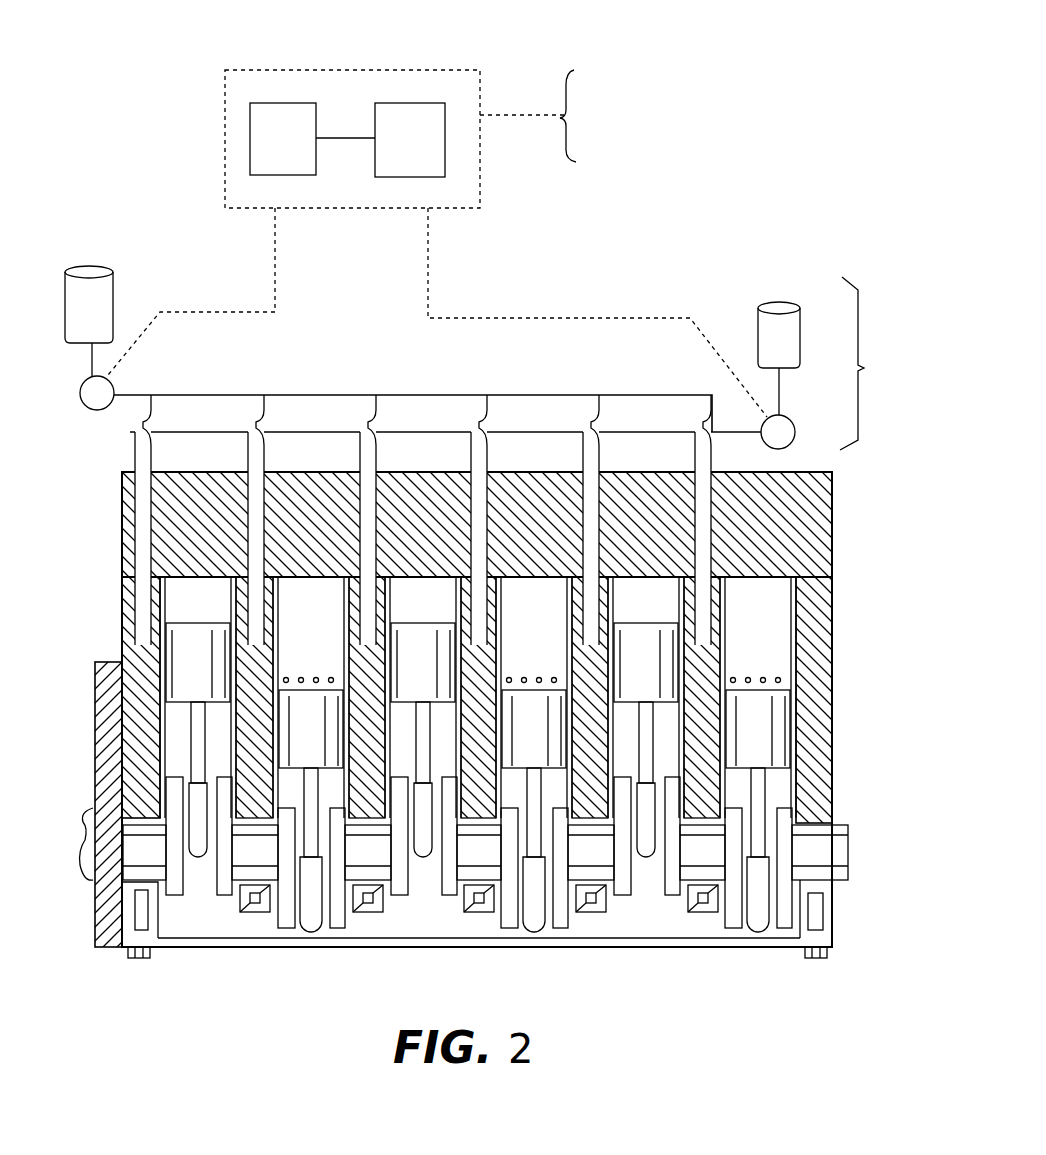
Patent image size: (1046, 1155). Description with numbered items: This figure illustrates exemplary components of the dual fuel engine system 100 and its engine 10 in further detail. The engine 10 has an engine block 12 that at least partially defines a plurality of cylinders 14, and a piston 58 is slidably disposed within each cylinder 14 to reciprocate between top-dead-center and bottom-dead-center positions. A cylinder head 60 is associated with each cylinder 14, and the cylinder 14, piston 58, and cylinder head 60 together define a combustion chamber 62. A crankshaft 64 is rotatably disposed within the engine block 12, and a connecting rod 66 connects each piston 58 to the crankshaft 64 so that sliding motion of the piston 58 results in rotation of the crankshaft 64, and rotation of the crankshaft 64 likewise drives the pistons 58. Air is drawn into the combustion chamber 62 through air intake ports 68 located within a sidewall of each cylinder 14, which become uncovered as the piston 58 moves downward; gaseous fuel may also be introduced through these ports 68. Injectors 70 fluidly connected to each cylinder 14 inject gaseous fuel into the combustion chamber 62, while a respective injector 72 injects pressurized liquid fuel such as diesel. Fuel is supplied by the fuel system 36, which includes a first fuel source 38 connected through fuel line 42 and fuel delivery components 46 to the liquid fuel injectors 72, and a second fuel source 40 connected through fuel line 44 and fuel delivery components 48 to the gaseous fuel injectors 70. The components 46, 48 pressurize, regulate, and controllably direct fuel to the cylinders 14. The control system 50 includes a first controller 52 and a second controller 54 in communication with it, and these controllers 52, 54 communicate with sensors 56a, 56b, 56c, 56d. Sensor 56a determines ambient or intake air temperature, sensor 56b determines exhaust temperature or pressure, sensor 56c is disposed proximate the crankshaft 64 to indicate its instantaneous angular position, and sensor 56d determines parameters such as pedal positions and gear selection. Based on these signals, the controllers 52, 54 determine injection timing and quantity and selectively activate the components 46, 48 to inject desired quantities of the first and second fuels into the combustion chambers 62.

The dual fuel engine system 100 is at (733, 72).
The control system 50 is at (417, 72).
The first controller 52 is at (292, 150).
The second controller 54 is at (418, 151).
The sensor 56a is at (545, 116).
The sensor 56b is at (597, 103).
The sensor 56c is at (86, 810).
The sensor 56d is at (597, 142).
The first fuel source 38 is at (100, 323).
The second fuel source 40 is at (789, 347).
The fuel system 36 is at (866, 363).
The fuel line 42 is at (138, 397).
The fuel delivery components 48 is at (791, 420).
The fuel delivery components 46 is at (113, 393).
The fuel line 44 is at (727, 435).
The cylinder head 60 is at (775, 533).
The cylinder 14 is at (797, 617).
The injector 72 is at (601, 612).
The combustion chamber 62 is at (773, 661).
The piston 58 is at (757, 741).
The injector 70 is at (700, 672).
The air intake port 68 is at (770, 681).
The connecting rod 66 is at (762, 806).
The crankshaft 64 is at (838, 800).
The engine block 12 is at (822, 752).
The engine 10 is at (184, 1004).